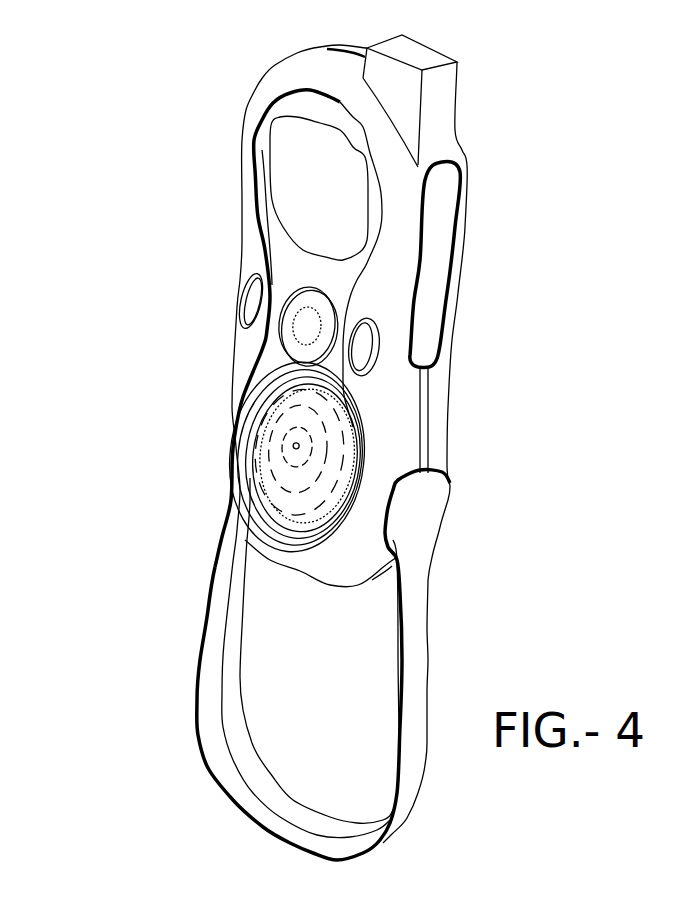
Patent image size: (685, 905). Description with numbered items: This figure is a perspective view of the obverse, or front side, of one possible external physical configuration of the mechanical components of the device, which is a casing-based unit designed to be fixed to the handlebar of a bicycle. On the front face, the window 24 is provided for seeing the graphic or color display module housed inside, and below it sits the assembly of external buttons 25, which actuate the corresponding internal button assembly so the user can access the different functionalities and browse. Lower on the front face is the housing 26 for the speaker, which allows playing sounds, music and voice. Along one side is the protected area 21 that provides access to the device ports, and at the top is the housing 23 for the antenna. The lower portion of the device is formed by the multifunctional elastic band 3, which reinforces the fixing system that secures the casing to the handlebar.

The multifunctional elastic band 3 is at (228, 672).
The protected area 21 is at (438, 242).
The housing for the antenna 23 is at (438, 102).
The window 24 is at (308, 194).
The assembly of external buttons 25 is at (360, 355).
The housing for the speaker 26 is at (278, 437).